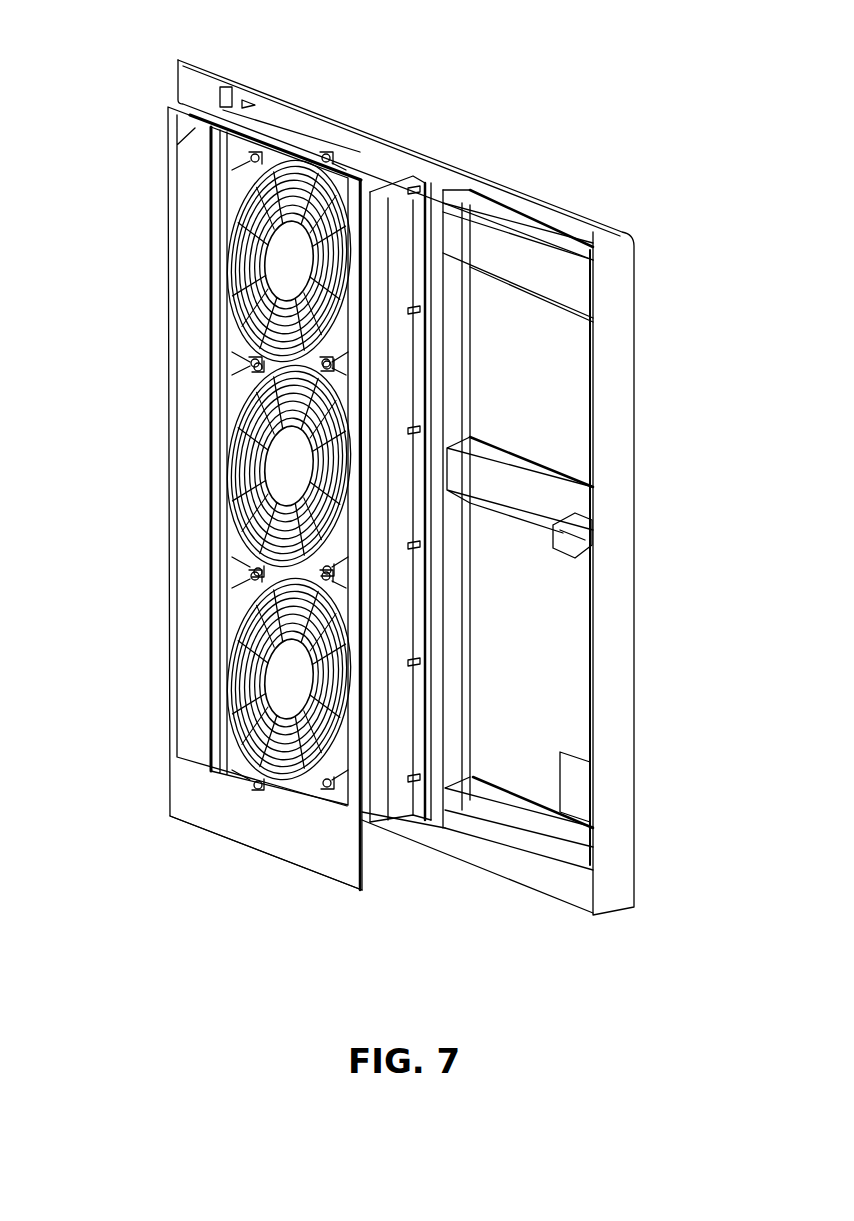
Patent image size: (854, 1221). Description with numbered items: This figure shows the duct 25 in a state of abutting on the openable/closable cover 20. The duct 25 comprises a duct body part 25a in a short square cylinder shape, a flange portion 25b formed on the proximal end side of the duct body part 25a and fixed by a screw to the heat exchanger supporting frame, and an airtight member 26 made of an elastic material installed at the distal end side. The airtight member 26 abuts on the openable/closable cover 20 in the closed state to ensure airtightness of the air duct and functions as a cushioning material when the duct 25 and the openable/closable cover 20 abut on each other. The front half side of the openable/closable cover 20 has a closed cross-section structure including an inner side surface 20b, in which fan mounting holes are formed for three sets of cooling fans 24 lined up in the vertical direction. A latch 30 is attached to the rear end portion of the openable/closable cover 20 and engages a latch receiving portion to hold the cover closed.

The openable/closable cover 20 is at (490, 128).
The inner side surface 20b is at (384, 296).
The cooling fan 24 is at (283, 165).
The duct 25 is at (168, 224).
The duct body part 25a is at (190, 600).
The flange portion 25b is at (358, 387).
The airtight member 26 is at (215, 350).
The latch 30 is at (598, 535).